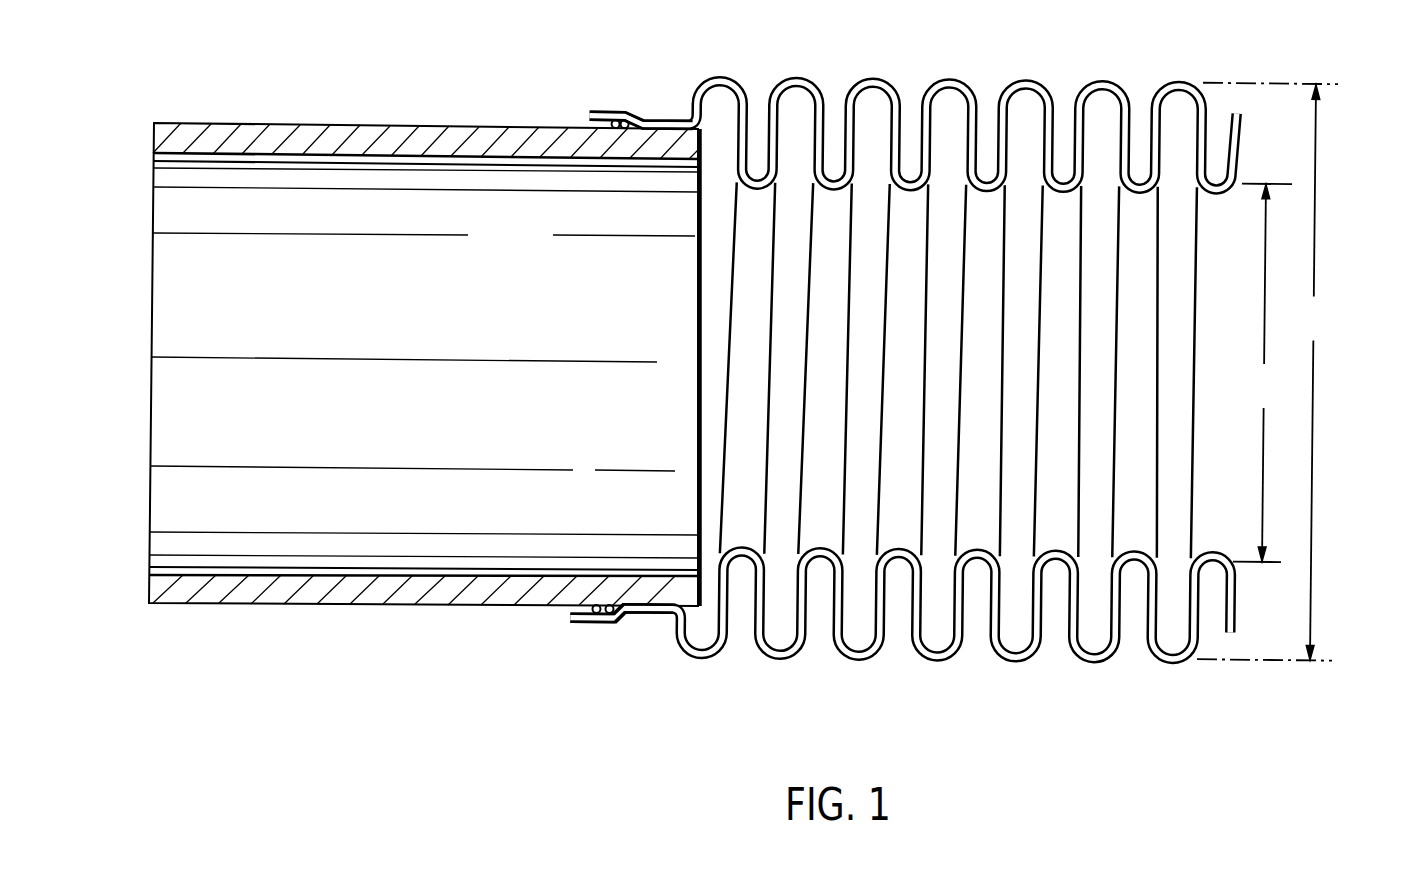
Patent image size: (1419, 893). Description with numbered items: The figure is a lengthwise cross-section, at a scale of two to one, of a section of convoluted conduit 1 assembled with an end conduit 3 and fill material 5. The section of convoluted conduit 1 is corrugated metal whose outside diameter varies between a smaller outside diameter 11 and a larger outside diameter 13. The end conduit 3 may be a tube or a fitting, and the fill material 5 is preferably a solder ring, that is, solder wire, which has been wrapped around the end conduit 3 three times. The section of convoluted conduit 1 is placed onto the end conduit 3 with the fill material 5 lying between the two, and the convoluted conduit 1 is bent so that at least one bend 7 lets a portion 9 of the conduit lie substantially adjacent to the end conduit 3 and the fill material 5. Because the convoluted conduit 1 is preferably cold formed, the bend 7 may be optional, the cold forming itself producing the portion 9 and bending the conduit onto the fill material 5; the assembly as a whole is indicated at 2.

The section of convoluted conduit 1 is at (1185, 668).
The flexible pipe connector assembly 2 is at (969, 404).
The end conduit 3 is at (348, 606).
The fill material 5 is at (582, 626).
The bend 7 is at (659, 627).
The portion 9 is at (663, 112).
The outside diameter 11 is at (1262, 373).
The outside diameter 13 is at (1267, 372).